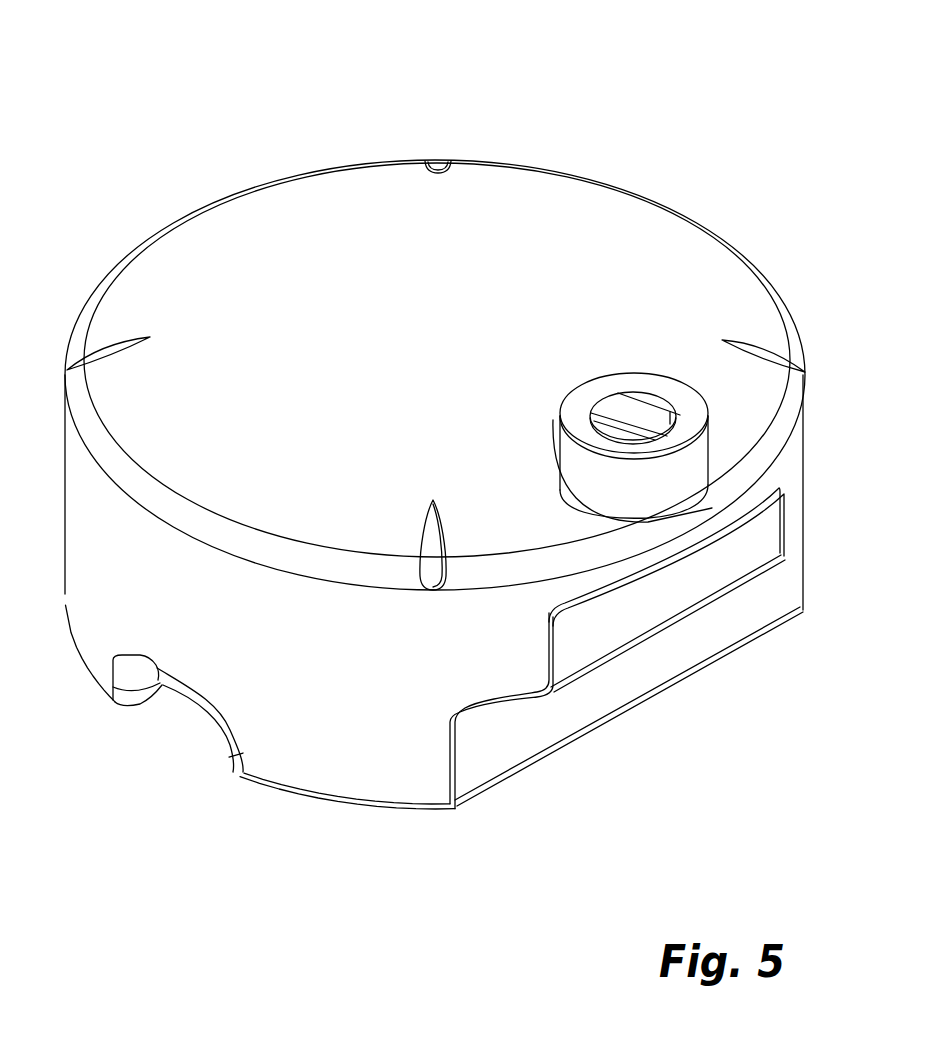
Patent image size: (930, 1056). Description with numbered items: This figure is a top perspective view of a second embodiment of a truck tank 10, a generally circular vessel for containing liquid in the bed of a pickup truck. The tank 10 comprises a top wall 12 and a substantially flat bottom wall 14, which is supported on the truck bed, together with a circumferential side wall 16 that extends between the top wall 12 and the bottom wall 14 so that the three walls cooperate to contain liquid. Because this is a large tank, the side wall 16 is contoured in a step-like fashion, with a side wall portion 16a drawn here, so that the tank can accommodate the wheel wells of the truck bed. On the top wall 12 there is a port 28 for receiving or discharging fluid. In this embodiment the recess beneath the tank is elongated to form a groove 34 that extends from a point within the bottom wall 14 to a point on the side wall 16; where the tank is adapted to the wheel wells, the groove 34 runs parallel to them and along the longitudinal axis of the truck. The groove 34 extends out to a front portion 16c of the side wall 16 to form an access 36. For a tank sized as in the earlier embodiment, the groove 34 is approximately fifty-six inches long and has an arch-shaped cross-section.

The truck tank 10 is at (582, 118).
The top wall 12 is at (391, 418).
The bottom wall 14 is at (308, 800).
The side wall 16 is at (669, 626).
The side wall portion 16a is at (640, 673).
The front portion 16c is at (370, 702).
The port 28 is at (687, 423).
The groove 34 is at (136, 733).
The access 36 is at (195, 697).